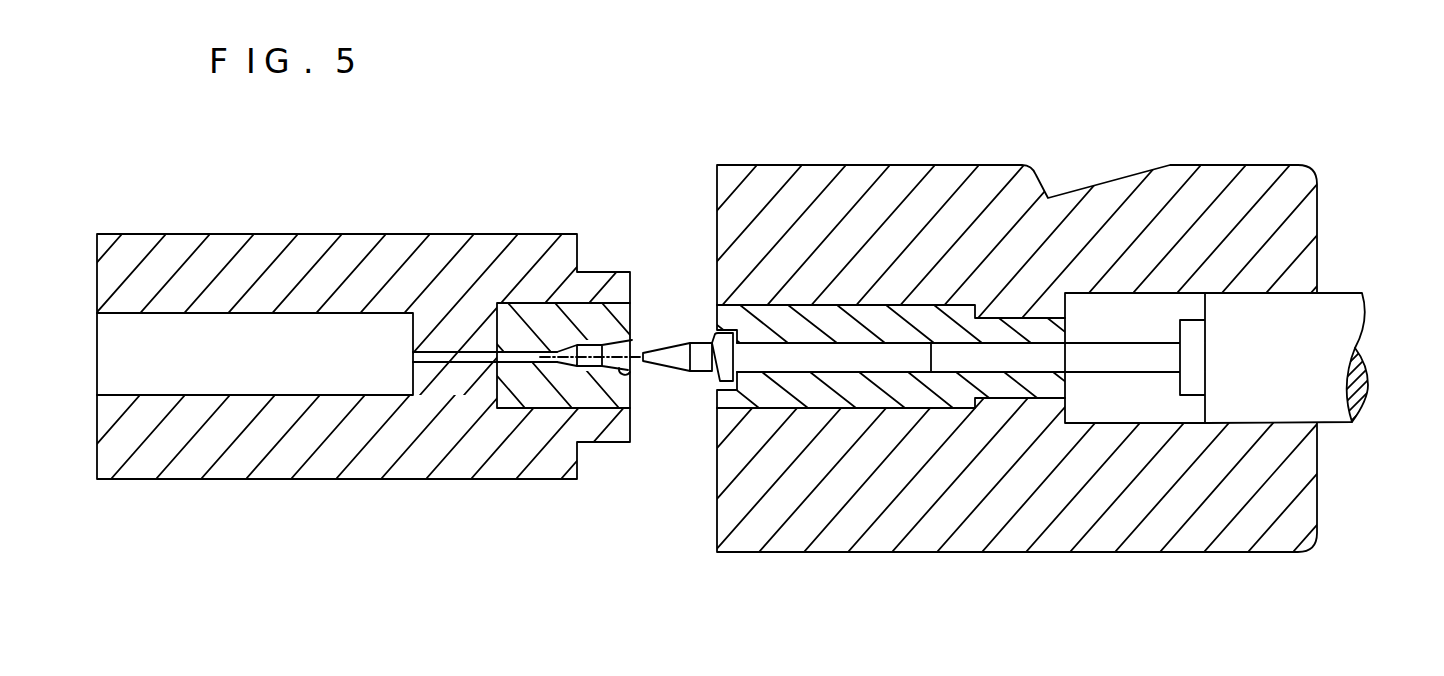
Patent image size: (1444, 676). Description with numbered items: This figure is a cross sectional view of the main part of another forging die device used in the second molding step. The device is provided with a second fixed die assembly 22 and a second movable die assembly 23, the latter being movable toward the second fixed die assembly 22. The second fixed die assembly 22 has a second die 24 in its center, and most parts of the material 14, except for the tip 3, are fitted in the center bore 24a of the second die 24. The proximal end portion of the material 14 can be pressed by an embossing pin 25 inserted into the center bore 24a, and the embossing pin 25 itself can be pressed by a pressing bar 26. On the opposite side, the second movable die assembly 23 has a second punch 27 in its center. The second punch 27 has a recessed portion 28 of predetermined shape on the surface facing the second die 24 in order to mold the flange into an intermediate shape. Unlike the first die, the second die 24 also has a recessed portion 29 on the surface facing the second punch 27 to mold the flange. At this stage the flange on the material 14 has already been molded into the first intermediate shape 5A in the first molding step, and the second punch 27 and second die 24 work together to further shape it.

The tip 3 is at (676, 342).
The first intermediate shape 5A is at (722, 353).
The material 14 is at (783, 340).
The second fixed die assembly 22 is at (1033, 163).
The second movable die assembly 23 is at (355, 235).
The second die 24 is at (817, 402).
The center bore 24a is at (851, 372).
The embossing pin 25 is at (1098, 360).
The pressing bar 26 is at (1338, 327).
The second punch 27 is at (536, 402).
The recessed portion 28 is at (633, 374).
The recessed portion 29 is at (718, 375).